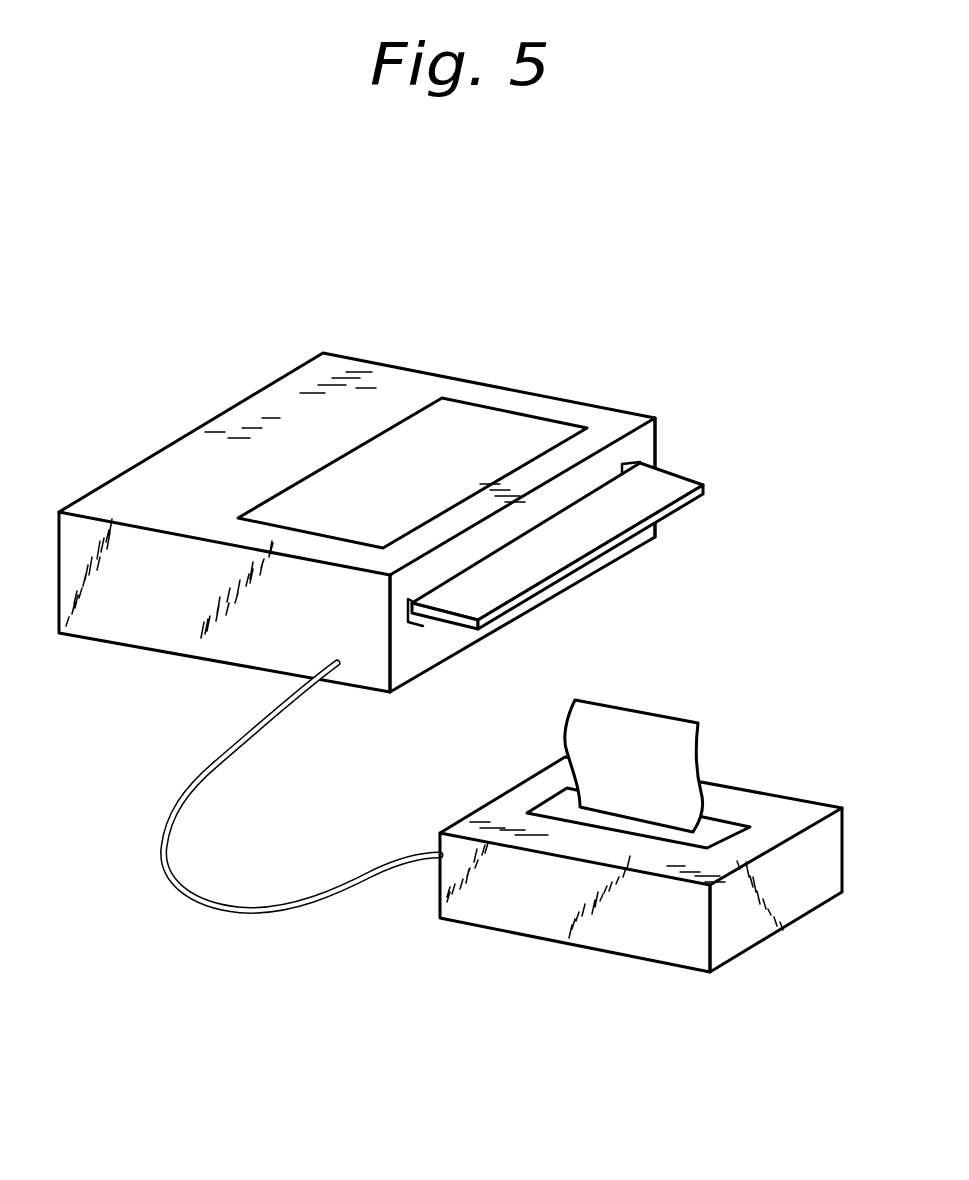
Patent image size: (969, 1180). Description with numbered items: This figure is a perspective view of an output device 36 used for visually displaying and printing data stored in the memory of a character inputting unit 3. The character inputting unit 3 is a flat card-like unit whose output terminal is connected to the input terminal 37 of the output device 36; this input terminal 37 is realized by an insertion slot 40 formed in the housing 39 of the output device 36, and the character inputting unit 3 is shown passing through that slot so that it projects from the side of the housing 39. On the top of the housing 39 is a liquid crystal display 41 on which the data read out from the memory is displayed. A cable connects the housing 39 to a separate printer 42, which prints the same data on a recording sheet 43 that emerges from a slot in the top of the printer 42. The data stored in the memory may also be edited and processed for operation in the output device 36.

The character inputting unit 3 is at (675, 488).
The output device 36 is at (575, 410).
The input terminal 37 is at (622, 467).
The housing 39 is at (150, 615).
The insertion slot 40 is at (450, 588).
The liquid crystal display 41 is at (470, 430).
The printer 42 is at (613, 922).
The recording sheet 43 is at (673, 752).